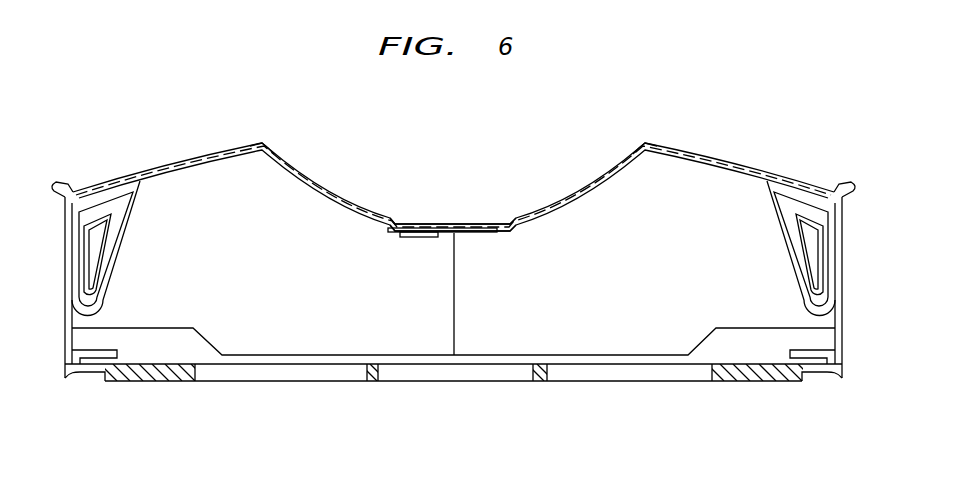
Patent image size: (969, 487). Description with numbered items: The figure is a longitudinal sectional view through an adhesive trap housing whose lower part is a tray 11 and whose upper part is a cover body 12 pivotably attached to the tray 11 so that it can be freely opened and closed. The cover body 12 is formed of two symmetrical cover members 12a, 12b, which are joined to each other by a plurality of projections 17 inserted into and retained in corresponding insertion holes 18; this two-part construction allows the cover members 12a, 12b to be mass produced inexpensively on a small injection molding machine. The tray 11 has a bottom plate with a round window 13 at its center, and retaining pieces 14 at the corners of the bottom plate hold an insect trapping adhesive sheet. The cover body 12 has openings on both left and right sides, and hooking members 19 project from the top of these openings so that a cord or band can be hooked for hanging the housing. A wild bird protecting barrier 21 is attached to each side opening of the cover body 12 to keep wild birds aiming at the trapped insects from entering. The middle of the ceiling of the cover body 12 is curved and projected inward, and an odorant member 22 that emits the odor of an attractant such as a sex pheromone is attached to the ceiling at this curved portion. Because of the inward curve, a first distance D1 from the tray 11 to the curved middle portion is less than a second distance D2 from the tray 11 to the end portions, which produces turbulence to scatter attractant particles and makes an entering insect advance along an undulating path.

The tray 11 is at (152, 385).
The cover body 12 is at (720, 153).
The cover member 12a is at (258, 142).
The cover member 12b is at (665, 143).
The round window 13 is at (470, 379).
The retaining piece 14 is at (77, 350).
The projection 17 is at (390, 233).
The insertion hole 18 is at (497, 227).
The hooking member 19 is at (62, 183).
The wild bird protecting barrier 21 is at (112, 283).
The odorant member 22 is at (418, 238).
The first distance D1 is at (508, 355).
The second distance D2 is at (142, 364).